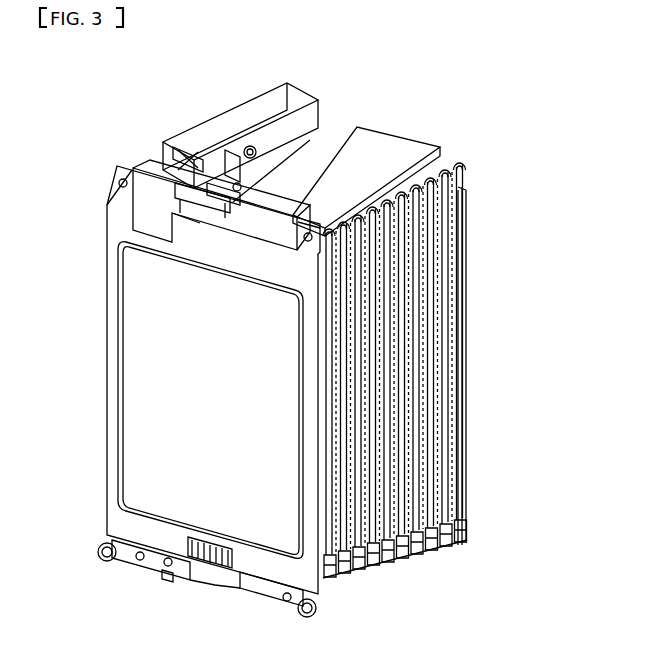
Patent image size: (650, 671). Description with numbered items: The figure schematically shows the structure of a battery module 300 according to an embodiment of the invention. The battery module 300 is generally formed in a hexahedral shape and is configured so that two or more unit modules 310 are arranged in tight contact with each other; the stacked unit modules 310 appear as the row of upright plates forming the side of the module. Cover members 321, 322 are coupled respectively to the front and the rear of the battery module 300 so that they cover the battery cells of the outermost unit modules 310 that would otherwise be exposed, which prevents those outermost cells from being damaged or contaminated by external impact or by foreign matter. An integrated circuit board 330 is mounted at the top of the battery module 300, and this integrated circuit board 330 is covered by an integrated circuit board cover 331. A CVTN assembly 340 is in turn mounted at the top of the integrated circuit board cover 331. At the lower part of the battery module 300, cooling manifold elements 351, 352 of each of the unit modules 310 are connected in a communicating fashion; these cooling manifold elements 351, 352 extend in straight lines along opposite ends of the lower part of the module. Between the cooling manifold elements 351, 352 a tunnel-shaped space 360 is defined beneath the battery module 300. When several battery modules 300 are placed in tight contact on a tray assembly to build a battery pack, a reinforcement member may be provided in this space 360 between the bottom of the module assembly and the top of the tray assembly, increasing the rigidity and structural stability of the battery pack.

The battery module 300 is at (92, 108).
The unit module 310 is at (447, 360).
The cover member 321 is at (158, 342).
The cover member 322 is at (463, 255).
The integrated circuit board 330 is at (150, 225).
The integrated circuit board cover 331 is at (385, 150).
The CVTN assembly 340 is at (243, 113).
The cooling manifold element 351 is at (98, 553).
The cooling manifold element 352 is at (310, 610).
The tunnel-shaped space 360 is at (208, 587).